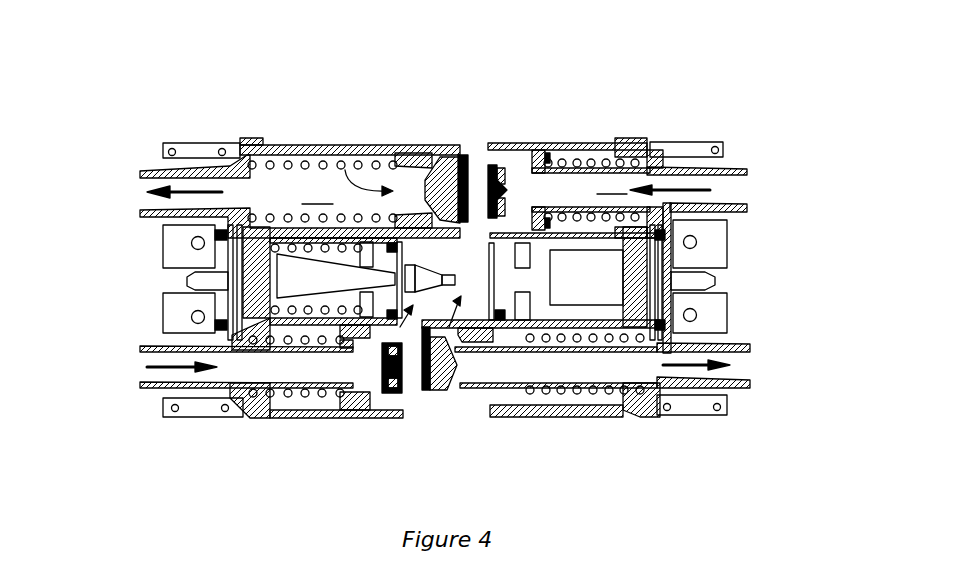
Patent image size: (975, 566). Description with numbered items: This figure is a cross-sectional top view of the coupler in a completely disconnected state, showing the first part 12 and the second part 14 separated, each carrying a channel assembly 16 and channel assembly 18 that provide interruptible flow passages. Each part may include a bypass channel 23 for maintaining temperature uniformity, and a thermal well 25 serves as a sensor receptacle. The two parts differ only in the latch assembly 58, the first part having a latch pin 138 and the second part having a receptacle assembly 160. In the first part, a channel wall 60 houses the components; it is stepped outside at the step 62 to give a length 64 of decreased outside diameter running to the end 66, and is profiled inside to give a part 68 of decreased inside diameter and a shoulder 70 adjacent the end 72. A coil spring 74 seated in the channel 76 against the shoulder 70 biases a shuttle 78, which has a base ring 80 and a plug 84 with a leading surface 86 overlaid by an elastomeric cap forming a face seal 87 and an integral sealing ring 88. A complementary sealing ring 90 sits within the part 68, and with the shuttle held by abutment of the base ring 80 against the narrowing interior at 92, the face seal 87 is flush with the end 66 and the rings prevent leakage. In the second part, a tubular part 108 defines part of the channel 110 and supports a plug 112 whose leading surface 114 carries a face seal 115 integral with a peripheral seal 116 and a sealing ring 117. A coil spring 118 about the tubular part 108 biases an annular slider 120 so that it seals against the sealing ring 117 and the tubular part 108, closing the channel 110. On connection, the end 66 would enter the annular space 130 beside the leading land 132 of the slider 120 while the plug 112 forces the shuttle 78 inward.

The first part 12 is at (295, 441).
The second part 14 is at (636, 474).
The channel assembly 16 is at (132, 184).
The channel assembly 18 is at (772, 180).
The bypass channel 23 is at (222, 297).
The thermal well 25 is at (180, 278).
The latch assembly 58 is at (372, 343).
The channel wall 60 is at (262, 148).
The external step 62 is at (412, 152).
The length of decreased outside diameter 64 is at (437, 160).
The end of channel wall 66 is at (483, 236).
The part of decreased inside diameter 68 is at (447, 230).
The shoulder 70 is at (235, 150).
The end of channel wall 72 is at (230, 152).
The coil spring 74 is at (304, 162).
The channel 76 is at (240, 193).
The shuttle 78 is at (345, 170).
The base ring 80 is at (423, 155).
The plug 84 is at (468, 163).
The leading surface 86 is at (270, 243).
The face seal 87 is at (492, 172).
The sealing ring 88 is at (482, 166).
The sealing ring 90 is at (447, 190).
The narrowing interior 92 is at (458, 160).
The tubular part 108 is at (745, 172).
The channel 110 is at (653, 183).
The plug 112 is at (648, 156).
The leading surface 114 is at (580, 168).
The face seal 115 is at (713, 193).
The peripheral seal 116 is at (510, 167).
The sealing ring 117 is at (540, 168).
The coil spring 118 is at (688, 147).
The annular slider 120 is at (622, 165).
The annular space 130 is at (540, 238).
The leading land 132 is at (527, 224).
The latch pin 138 is at (418, 335).
The receptacle assembly 160 is at (440, 395).